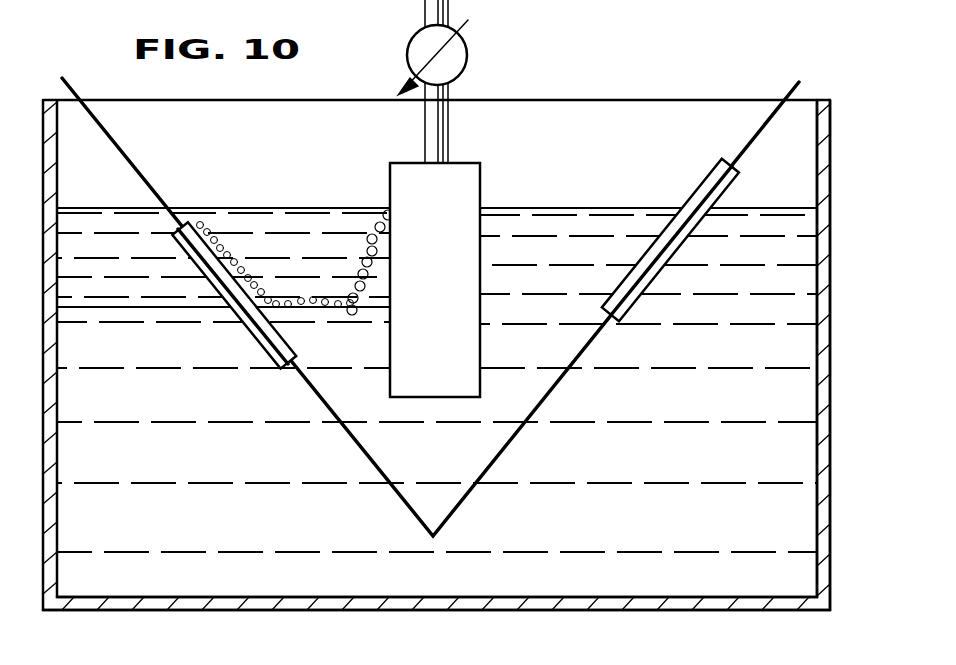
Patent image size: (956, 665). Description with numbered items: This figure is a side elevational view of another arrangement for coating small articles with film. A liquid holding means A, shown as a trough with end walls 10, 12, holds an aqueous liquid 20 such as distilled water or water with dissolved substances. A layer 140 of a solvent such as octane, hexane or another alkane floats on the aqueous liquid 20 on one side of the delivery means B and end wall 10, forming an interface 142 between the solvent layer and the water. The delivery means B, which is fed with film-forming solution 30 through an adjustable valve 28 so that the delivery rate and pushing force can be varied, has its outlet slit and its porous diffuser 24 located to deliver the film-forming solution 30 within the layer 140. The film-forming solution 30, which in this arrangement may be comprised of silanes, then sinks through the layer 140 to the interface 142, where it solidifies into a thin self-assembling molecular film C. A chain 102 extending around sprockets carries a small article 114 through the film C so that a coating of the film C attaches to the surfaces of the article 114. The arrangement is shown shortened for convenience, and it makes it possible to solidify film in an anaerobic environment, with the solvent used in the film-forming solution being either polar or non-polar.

The end wall 10 is at (45, 587).
The end wall 12 is at (832, 480).
The aqueous liquid 20 is at (208, 570).
The porous member 24 is at (388, 218).
The adjustable valve 28 is at (417, 35).
The film-forming solution 30 is at (375, 272).
The chain 102 is at (742, 152).
The article 114 is at (258, 334).
The solvent layer 140 is at (96, 232).
The interface 142 is at (150, 310).
The liquid holding means A is at (487, 603).
The delivery means B is at (488, 186).
The self-assembling molecular film C is at (282, 282).